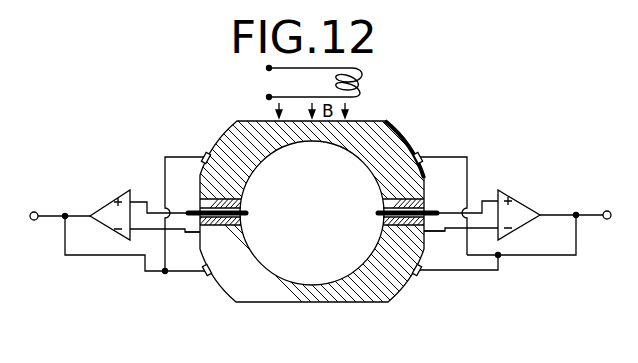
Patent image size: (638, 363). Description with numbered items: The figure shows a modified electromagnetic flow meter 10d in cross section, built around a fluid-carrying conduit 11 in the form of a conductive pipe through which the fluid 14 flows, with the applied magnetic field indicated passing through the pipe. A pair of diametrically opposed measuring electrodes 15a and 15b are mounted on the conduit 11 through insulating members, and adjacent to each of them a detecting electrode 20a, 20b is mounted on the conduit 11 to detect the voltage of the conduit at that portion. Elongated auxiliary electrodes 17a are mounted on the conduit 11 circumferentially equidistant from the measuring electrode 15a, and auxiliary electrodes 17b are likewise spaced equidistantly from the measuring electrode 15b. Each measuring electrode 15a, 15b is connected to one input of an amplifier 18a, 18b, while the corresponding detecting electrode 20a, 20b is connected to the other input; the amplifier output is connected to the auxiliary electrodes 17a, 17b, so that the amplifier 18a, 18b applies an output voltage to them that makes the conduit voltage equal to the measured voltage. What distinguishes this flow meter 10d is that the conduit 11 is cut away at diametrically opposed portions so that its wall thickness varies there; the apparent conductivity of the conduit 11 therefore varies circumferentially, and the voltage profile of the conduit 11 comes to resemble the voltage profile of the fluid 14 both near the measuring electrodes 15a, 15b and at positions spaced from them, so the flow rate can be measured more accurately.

The electromagnetic flow meter 10d is at (403, 134).
The fluid-carrying conduit 11 is at (385, 122).
The fluid 14 is at (319, 272).
The measuring electrode 15a is at (378, 214).
The measuring electrode 15b is at (248, 212).
The auxiliary electrode 17a is at (420, 153).
The auxiliary electrode 17b is at (204, 153).
The amplifier 18a is at (520, 204).
The amplifier 18b is at (108, 204).
The detecting electrode 20a is at (427, 233).
The detecting electrode 20b is at (199, 234).